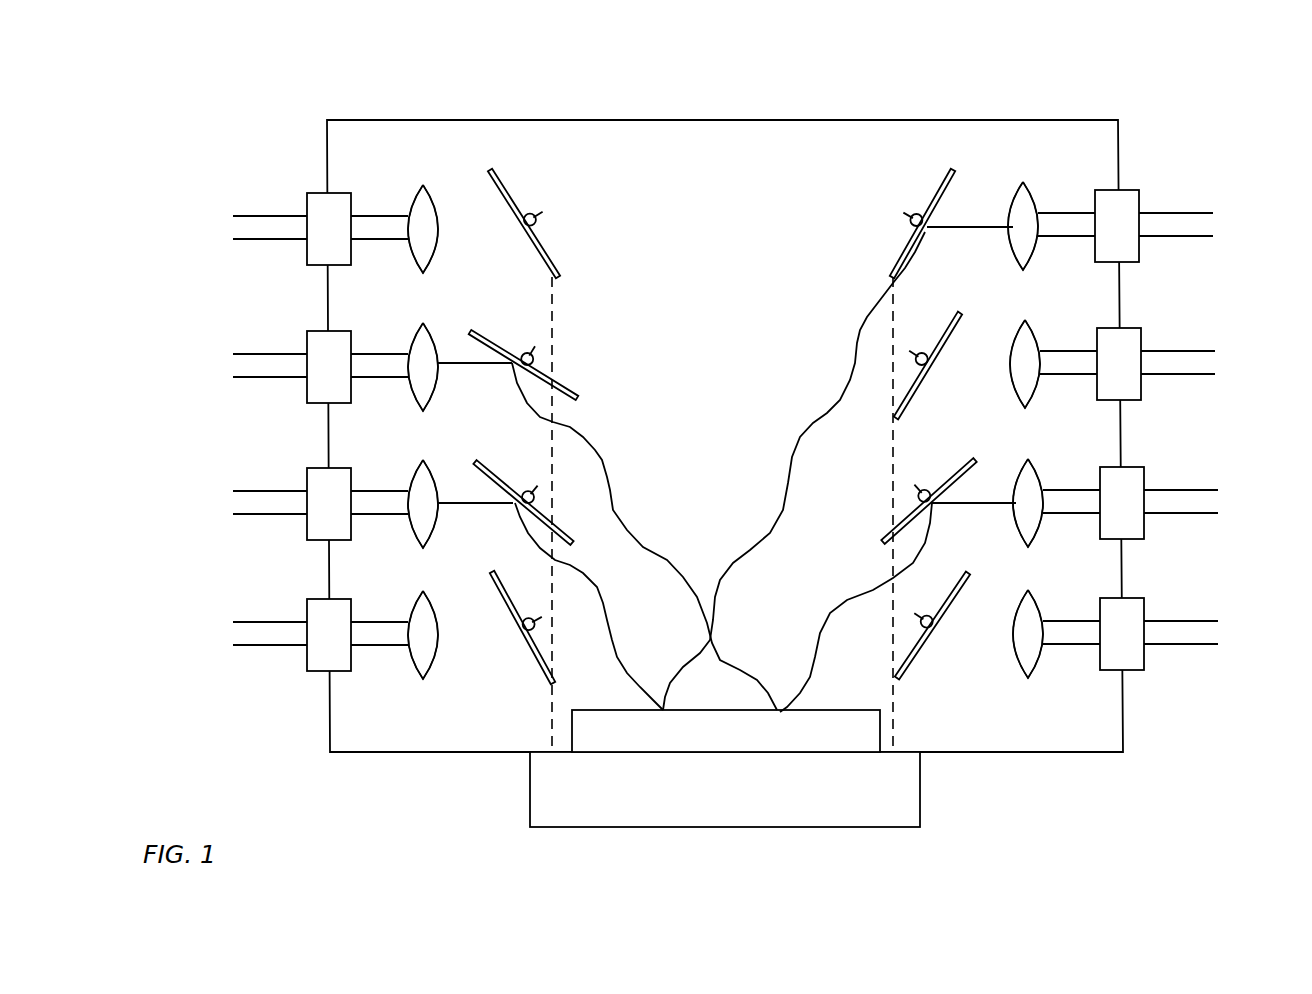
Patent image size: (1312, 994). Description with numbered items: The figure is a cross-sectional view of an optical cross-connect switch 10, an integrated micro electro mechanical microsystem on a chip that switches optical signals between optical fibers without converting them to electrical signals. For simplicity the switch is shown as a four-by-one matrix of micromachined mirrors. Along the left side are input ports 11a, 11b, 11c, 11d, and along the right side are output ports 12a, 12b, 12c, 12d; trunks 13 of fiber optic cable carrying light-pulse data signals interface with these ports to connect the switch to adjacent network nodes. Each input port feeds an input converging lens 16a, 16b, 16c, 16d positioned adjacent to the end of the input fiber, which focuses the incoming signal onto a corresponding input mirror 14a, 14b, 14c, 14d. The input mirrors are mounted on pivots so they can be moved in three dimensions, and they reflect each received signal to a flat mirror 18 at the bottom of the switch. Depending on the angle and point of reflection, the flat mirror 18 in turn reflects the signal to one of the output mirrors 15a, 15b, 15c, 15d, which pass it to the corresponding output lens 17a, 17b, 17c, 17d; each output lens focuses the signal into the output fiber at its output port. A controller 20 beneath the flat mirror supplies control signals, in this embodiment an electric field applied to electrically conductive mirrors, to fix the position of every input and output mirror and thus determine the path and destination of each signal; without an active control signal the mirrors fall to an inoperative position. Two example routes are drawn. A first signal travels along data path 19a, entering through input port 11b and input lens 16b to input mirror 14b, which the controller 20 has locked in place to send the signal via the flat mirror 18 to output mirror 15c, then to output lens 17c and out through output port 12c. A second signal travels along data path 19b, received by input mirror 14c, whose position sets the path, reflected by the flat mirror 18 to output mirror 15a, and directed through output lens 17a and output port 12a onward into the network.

The optical cross-connect switch 10 is at (970, 110).
The input port 11a is at (312, 185).
The input port 11b is at (312, 323).
The input port 11c is at (312, 460).
The input port 11d is at (312, 591).
The output port 12a is at (1138, 188).
The output port 12b is at (1140, 326).
The output port 12c is at (1143, 465).
The output port 12d is at (1143, 596).
The trunks 13 is at (226, 227).
The input mirror 14a is at (549, 237).
The input mirror 14b is at (572, 381).
The input mirror 14c is at (502, 471).
The input mirror 14d is at (531, 656).
The output mirror 15a is at (900, 237).
The output mirror 15b is at (946, 319).
The output mirror 15c is at (951, 472).
The output mirror 15d is at (930, 659).
The input converging lens 16a is at (406, 200).
The input converging lens 16b is at (406, 338).
The input converging lens 16c is at (406, 475).
The input converging lens 16d is at (406, 606).
The output lens 17a is at (1043, 200).
The output lens 17b is at (1045, 338).
The output lens 17c is at (1048, 477).
The output lens 17d is at (1048, 608).
The flat mirror 18 is at (733, 746).
The data path 19a is at (602, 462).
The data path 19b is at (822, 413).
The controller 20 is at (797, 802).